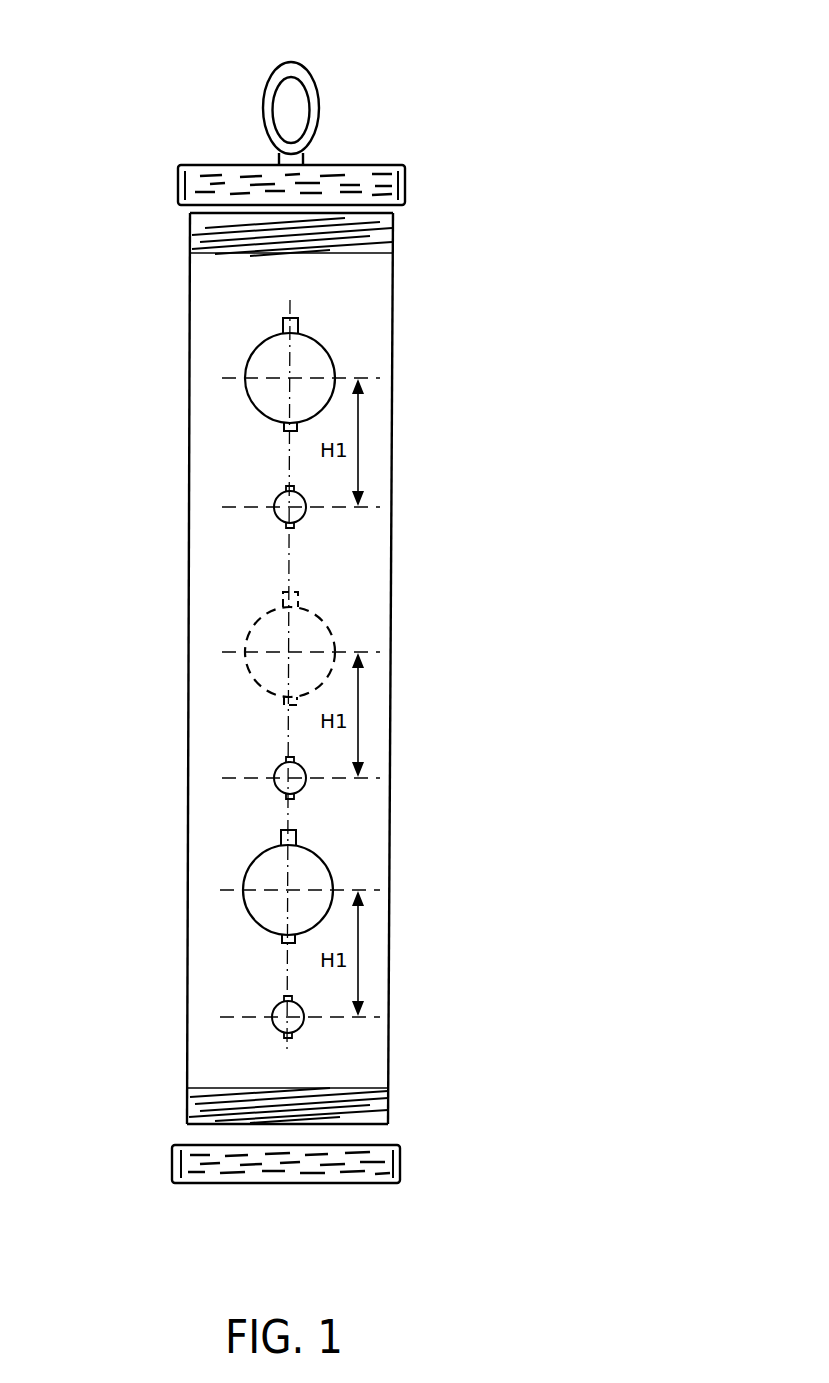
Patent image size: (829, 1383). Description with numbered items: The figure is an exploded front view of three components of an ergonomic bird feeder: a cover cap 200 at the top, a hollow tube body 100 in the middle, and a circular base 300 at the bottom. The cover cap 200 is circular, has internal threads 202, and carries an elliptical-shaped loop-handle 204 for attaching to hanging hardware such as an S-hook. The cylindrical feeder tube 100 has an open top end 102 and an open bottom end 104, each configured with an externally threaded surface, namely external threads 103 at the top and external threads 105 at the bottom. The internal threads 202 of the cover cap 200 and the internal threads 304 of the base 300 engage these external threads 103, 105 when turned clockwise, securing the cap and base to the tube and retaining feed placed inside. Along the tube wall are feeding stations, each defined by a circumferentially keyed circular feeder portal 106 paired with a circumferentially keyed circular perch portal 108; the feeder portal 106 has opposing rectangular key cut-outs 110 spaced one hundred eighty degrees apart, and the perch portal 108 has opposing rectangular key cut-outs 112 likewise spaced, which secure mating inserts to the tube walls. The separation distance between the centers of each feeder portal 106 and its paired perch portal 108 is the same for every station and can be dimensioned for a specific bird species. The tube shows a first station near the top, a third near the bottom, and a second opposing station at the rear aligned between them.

The hollow tube body 100 is at (390, 320).
The open top end 102 is at (190, 243).
The external threads 103 is at (332, 250).
The open bottom end 104 is at (340, 1108).
The external threads 105 is at (250, 1100).
The circumferentially keyed feeder portal 106 is at (335, 363).
The circumferentially keyed perch portal 108 is at (305, 517).
The rectangular key cut-outs 110 is at (285, 430).
The rectangular key cut-outs 112 is at (290, 520).
The cover cap 200 is at (405, 174).
The internal threads 202 is at (335, 183).
The loop-handle 204 is at (312, 82).
The circular base 300 is at (400, 1158).
The internal threads 304 is at (223, 1178).